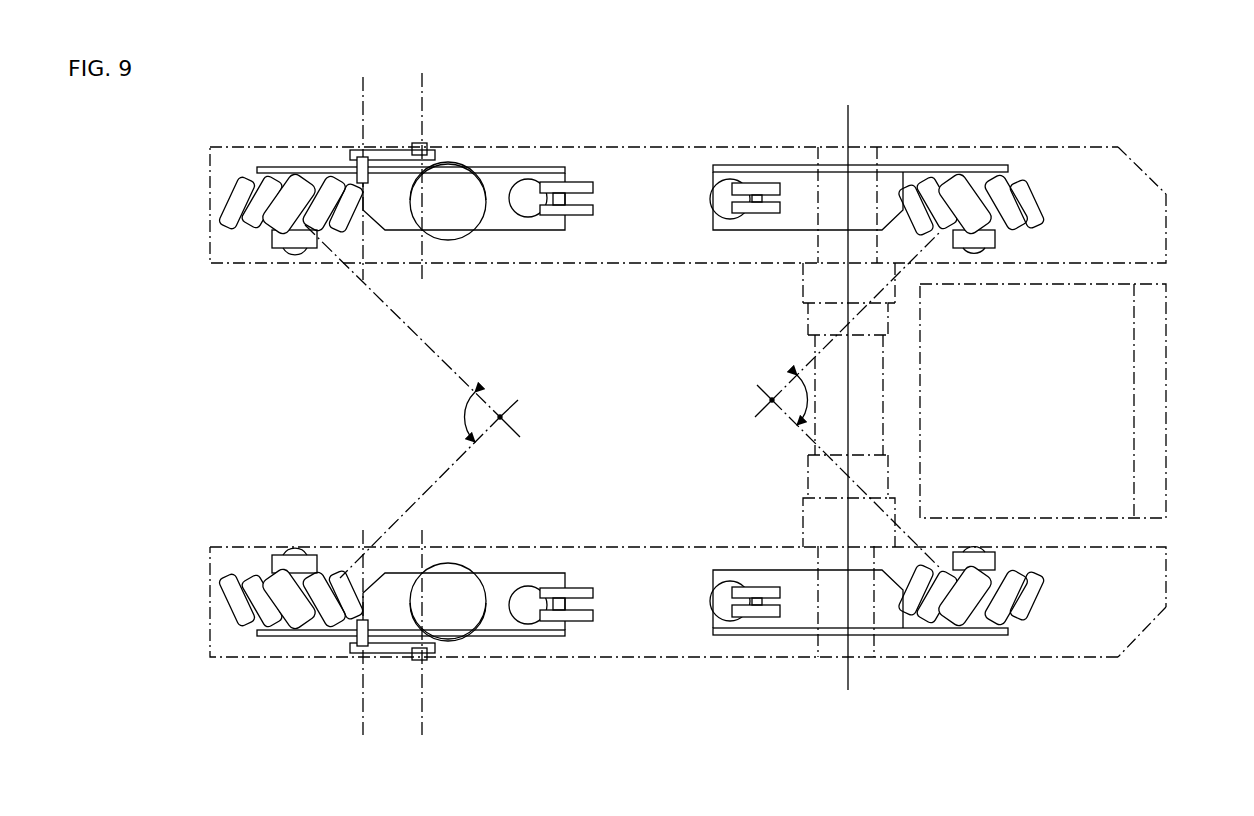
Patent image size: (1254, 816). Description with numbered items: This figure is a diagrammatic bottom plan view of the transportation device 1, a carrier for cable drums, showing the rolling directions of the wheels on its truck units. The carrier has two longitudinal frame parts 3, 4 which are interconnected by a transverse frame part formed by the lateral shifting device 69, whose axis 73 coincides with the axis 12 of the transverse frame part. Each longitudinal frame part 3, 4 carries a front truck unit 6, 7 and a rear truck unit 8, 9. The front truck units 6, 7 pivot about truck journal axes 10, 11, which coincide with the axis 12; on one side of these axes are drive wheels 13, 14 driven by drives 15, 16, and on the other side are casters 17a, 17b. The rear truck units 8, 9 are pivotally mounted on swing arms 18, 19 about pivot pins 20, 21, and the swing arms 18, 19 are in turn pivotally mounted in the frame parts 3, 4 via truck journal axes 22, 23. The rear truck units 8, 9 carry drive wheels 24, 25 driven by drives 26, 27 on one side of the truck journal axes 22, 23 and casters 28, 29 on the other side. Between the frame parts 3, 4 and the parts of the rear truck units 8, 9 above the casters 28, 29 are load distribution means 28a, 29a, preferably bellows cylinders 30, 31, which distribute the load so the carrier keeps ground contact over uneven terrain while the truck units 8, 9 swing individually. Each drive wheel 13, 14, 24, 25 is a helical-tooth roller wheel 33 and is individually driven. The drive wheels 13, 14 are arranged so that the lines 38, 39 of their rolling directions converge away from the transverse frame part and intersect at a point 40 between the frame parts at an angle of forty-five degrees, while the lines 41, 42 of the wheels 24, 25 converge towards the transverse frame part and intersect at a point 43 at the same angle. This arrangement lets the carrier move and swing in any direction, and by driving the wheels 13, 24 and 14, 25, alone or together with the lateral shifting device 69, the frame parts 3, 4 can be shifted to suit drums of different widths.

The transportation device 1 is at (1162, 162).
The longitudinal frame part 3 is at (1079, 631).
The longitudinal frame part 4 is at (1092, 173).
The front truck unit 6 is at (833, 641).
The front truck unit 7 is at (806, 162).
The rear truck unit 8 is at (473, 641).
The rear truck unit 9 is at (470, 164).
The truck journal axis 10 is at (851, 687).
The truck journal axis 11 is at (851, 120).
The axis of the transverse frame part 12 is at (850, 387).
The drive wheel 13 is at (998, 591).
The drive wheel 14 is at (1006, 207).
The drive 15 is at (985, 560).
The drive 16 is at (978, 252).
The caster 17a is at (758, 620).
The caster 17b is at (762, 182).
The swing arm 18 is at (394, 657).
The swing arm 19 is at (393, 150).
The pivot pin 20 is at (363, 717).
The pivot pin 21 is at (363, 92).
The truck journal axis 22 is at (420, 718).
The truck journal axis 23 is at (422, 92).
The drive wheel 24 is at (230, 559).
The drive wheel 25 is at (230, 243).
The drive 26 is at (285, 556).
The drive 27 is at (287, 238).
The caster 28 is at (581, 596).
The load distribution means 28a is at (490, 526).
The caster 29 is at (581, 184).
The load distribution means 29a is at (497, 187).
The bellows cylinder 30 is at (473, 590).
The bellows cylinder 31 is at (470, 215).
The helical gear 33 is at (298, 190).
The line of rolling direction 38 is at (805, 434).
The line of rolling direction 39 is at (803, 362).
The intersection point 40 is at (772, 400).
The line of rolling direction 41 is at (442, 478).
The line of rolling direction 42 is at (447, 347).
The intersection point 43 is at (503, 416).
The lateral shifting device 69 is at (860, 347).
The axis of the lateral shifting device 73 is at (858, 412).